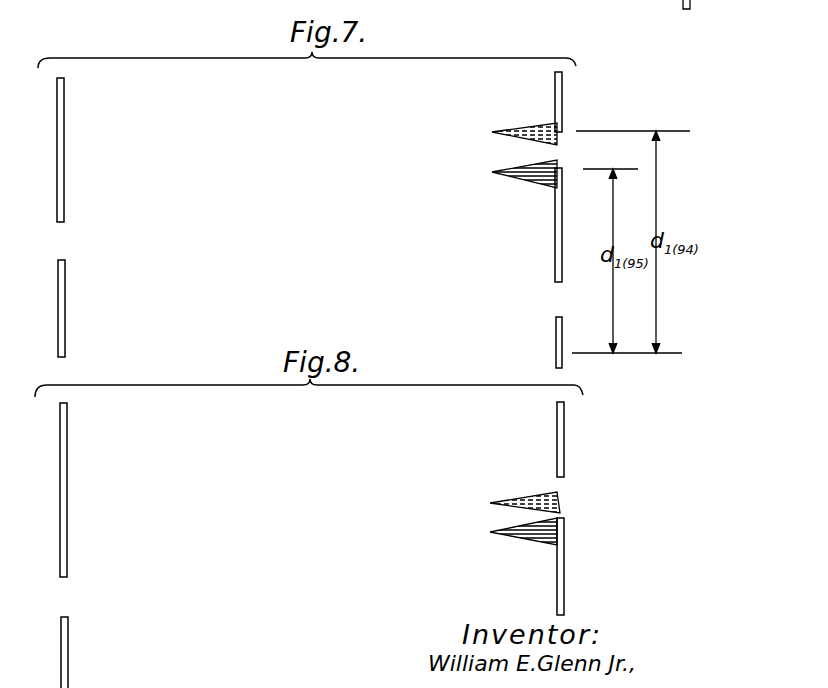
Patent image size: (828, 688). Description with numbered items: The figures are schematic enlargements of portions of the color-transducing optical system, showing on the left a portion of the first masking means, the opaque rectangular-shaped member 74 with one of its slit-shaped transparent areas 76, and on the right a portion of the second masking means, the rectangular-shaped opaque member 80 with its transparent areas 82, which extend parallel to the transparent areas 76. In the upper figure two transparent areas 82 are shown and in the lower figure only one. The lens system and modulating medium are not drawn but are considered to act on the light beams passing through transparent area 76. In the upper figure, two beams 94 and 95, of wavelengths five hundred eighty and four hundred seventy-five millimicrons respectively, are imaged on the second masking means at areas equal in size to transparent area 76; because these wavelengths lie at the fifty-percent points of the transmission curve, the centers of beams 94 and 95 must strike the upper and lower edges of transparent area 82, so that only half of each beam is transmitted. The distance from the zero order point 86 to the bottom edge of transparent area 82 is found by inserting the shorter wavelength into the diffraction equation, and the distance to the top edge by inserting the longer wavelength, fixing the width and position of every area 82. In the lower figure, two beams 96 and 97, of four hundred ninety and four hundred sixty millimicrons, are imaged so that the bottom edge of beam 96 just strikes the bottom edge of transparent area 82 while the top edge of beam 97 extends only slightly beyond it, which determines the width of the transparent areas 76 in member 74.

In FIG. 7, the opaque rectangular-shaped member 74 is at (66, 303).
In FIG. 8, the opaque rectangular-shaped member 74 is at (68, 516).
In FIG. 7, the transparent areas 76 is at (64, 238).
In FIG. 8, the transparent areas 76 is at (65, 598).
In FIG. 7, the rectangular-shaped opaque member 80 is at (563, 217).
In FIG. 8, the rectangular-shaped opaque member 80 is at (565, 555).
In FIG. 7, the transparent areas 82 is at (562, 150).
In FIG. 8, the transparent areas 82 is at (561, 494).
In FIG. 7, the zero order point 86 is at (556, 355).
In FIG. 7, the beam 94 is at (516, 130).
In FIG. 7, the beam 95 is at (523, 182).
In FIG. 8, the beam 96 is at (519, 500).
In FIG. 8, the beam 97 is at (531, 539).